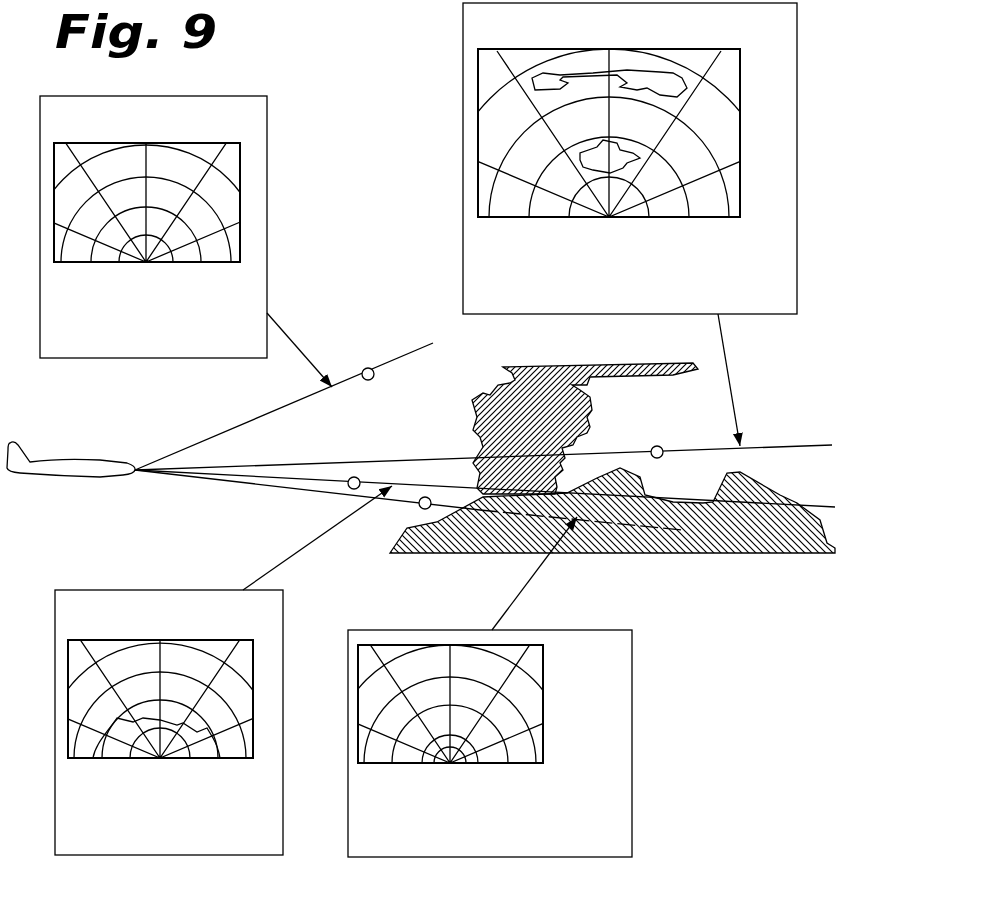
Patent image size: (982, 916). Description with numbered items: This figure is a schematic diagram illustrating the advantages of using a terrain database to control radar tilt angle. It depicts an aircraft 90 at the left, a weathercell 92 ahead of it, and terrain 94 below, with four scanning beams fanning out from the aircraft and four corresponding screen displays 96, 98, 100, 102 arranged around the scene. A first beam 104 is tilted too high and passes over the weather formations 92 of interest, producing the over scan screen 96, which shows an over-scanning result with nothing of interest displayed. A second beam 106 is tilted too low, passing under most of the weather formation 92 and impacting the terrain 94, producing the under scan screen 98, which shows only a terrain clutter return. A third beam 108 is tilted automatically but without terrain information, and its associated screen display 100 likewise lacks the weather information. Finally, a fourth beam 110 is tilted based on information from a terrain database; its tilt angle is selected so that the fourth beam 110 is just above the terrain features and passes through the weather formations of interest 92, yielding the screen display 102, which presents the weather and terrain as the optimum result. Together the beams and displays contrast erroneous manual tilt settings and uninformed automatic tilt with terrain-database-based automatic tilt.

The aircraft 90 is at (116, 458).
The weathercell 92 is at (592, 410).
The terrain 94 is at (781, 494).
The over scan screen 96 is at (213, 143).
The under scan screen 98 is at (85, 640).
The screen display 100 is at (543, 705).
The screen display 102 is at (706, 49).
The first beam 104 is at (368, 368).
The second beam 106 is at (356, 477).
The third beam 108 is at (420, 508).
The fourth beam 110 is at (660, 446).